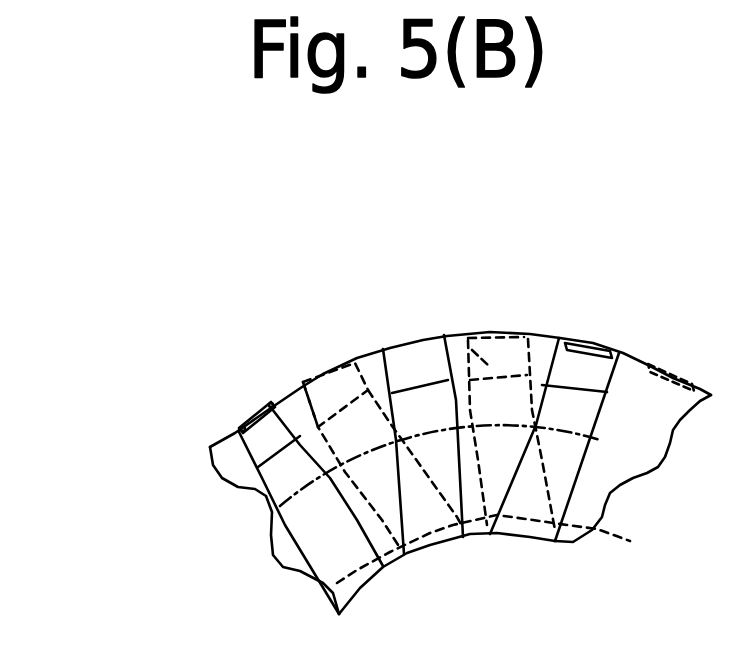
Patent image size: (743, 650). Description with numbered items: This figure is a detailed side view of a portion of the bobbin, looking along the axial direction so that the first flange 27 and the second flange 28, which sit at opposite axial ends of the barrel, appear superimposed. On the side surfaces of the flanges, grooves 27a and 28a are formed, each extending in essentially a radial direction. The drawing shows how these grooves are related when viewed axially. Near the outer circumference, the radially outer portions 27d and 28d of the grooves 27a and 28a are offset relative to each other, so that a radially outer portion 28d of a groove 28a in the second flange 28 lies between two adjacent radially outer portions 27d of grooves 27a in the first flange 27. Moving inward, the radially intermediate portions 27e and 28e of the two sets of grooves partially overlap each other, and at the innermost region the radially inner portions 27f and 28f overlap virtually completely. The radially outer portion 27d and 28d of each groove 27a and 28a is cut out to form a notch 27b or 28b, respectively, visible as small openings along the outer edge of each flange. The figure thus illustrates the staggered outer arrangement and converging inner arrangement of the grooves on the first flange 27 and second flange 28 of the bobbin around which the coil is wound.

The first flange 27 is at (545, 337).
The groove 27a is at (447, 335).
The notch 27b is at (368, 390).
The radially outer portion 27d is at (503, 357).
The radially intermediate portion 27e is at (528, 483).
The radially inner portion 27f is at (530, 527).
The second flange 28 is at (632, 355).
The groove 28a is at (603, 372).
The notch 28b is at (262, 410).
The radially outer portion 28d is at (253, 446).
The radially intermediate portion 28e is at (285, 481).
The radially inner portion 28f is at (350, 588).